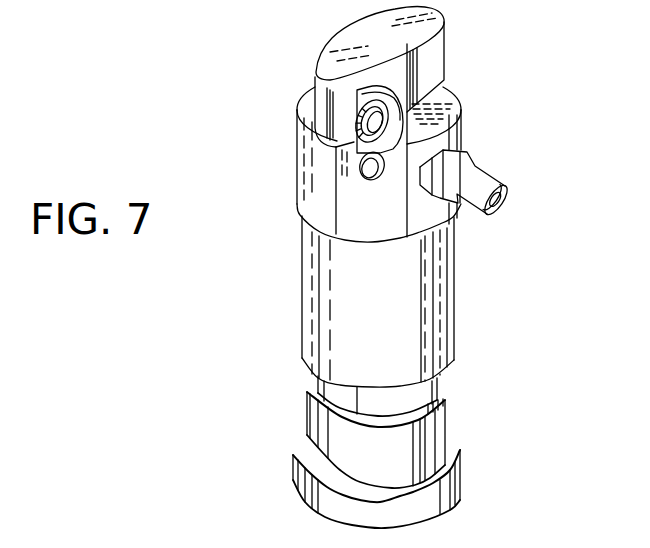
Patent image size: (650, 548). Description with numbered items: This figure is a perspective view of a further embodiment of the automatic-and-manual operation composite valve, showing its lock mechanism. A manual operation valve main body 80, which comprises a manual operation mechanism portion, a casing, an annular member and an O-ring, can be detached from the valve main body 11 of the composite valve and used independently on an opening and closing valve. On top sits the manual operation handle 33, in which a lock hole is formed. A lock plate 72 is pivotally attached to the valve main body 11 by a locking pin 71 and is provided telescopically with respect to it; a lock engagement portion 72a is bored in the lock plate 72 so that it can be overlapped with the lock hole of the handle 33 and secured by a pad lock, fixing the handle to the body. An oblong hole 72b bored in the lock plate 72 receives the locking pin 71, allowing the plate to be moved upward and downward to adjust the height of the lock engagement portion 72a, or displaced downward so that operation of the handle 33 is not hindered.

The manual operation valve main body 80 is at (288, 71).
The manual operation handle 33 is at (437, 51).
The lock plate 72 is at (361, 140).
The lock engagement portion 72a is at (381, 133).
The locking pin 71 is at (360, 176).
The oblong hole 72b is at (365, 182).
The valve main body 11 is at (452, 297).